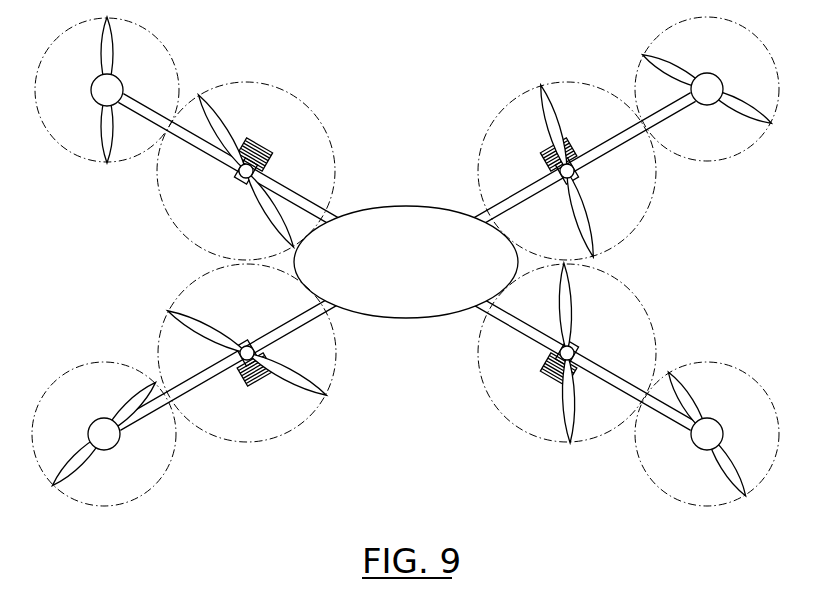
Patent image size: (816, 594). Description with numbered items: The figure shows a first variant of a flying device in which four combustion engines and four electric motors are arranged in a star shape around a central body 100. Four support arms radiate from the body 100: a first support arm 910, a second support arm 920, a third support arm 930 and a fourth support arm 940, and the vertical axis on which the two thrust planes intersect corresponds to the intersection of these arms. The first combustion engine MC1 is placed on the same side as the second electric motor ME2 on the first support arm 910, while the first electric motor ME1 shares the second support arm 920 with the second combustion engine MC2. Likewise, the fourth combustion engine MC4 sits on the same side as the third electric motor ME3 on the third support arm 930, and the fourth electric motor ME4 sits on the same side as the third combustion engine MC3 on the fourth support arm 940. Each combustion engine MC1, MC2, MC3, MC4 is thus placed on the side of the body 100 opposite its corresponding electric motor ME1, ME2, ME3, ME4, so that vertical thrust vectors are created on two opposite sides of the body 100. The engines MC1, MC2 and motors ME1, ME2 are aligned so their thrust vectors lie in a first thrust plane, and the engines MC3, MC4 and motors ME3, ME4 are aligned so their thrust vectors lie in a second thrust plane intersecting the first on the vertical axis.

The central body 100 is at (406, 231).
The first support arm 910 is at (250, 162).
The second support arm 920 is at (565, 362).
The third support arm 930 is at (249, 362).
The fourth support arm 940 is at (568, 161).
The first electric motor ME1 is at (707, 434).
The second electric motor ME2 is at (107, 90).
The third electric motor ME3 is at (104, 434).
The fourth electric motor ME4 is at (707, 89).
The first combustion engine MC1 is at (246, 171).
The second combustion engine MC2 is at (567, 353).
The third combustion engine MC3 is at (567, 171).
The fourth combustion engine MC4 is at (247, 353).